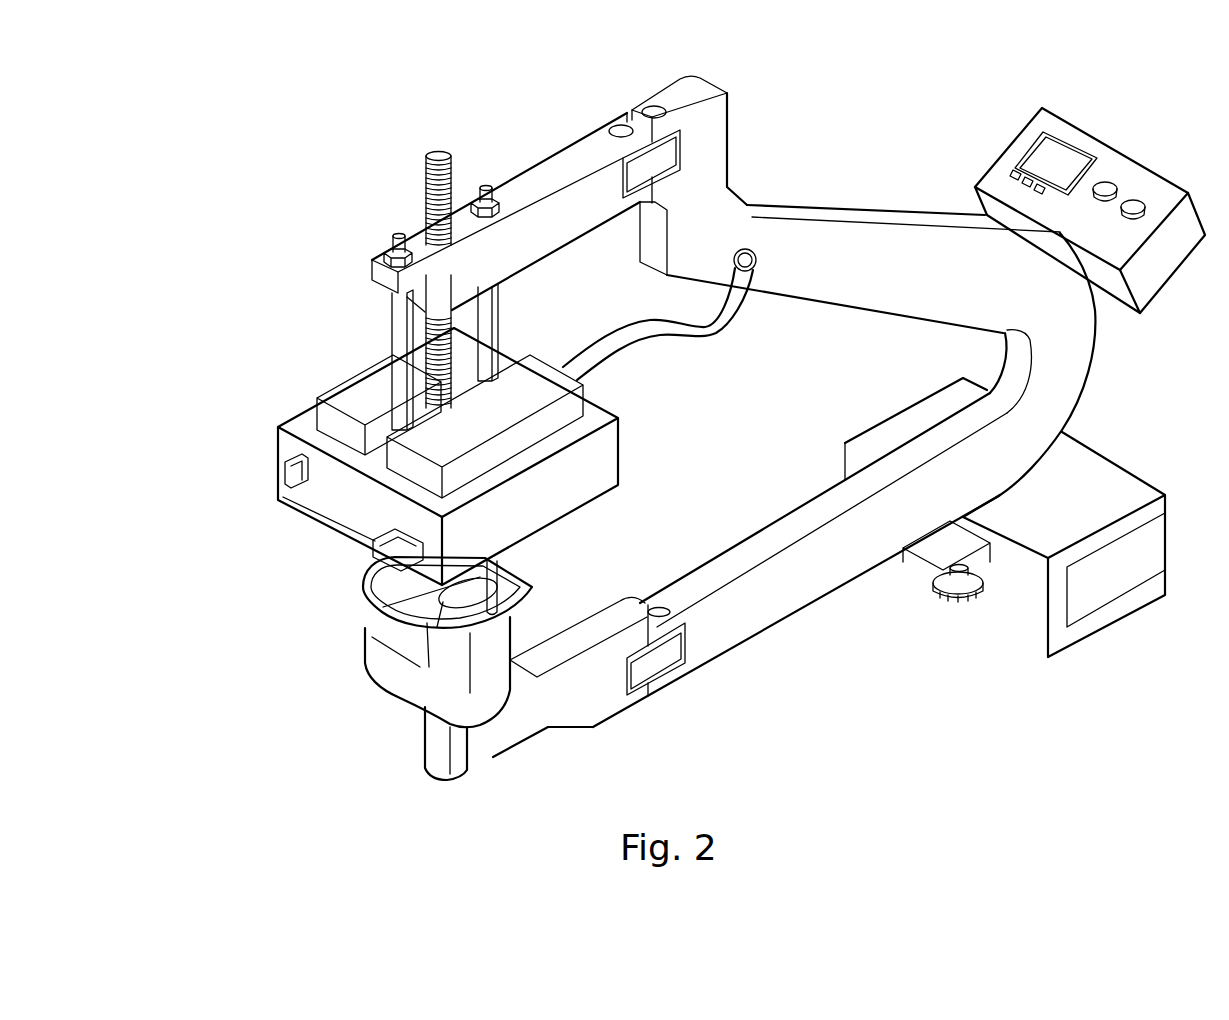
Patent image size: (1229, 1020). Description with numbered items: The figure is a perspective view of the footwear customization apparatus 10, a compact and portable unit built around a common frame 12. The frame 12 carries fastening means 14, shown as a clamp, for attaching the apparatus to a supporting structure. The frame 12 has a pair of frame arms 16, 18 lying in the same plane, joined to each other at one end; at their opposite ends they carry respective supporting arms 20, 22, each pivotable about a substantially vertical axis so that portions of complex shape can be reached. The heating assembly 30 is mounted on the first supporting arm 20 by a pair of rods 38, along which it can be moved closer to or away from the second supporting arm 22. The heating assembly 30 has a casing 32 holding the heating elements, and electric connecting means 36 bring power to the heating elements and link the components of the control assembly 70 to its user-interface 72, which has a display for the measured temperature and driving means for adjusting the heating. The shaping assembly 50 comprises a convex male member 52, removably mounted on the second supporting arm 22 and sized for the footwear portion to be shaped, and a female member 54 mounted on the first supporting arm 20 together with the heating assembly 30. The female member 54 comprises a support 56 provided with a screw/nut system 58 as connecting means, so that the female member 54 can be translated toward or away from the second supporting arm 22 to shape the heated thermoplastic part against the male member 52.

The apparatus 10 is at (255, 652).
The frame 12 is at (947, 165).
The fastening means 14 is at (953, 600).
The frame arm 16 is at (797, 213).
The frame arm 18 is at (747, 623).
The first supporting arm 20 is at (510, 192).
The second supporting arm 22 is at (582, 697).
The heating assembly 30 is at (278, 534).
The casing 32 is at (363, 387).
The electric connecting means 36 is at (680, 333).
The rods 38 is at (398, 327).
The shaping assembly 50 is at (375, 723).
The male member 52 is at (483, 703).
The female member 54 is at (367, 588).
The support 56 is at (383, 613).
The screw/nut system 58 is at (420, 188).
The control assembly 70 is at (1157, 133).
The user-interface 72 is at (1153, 268).